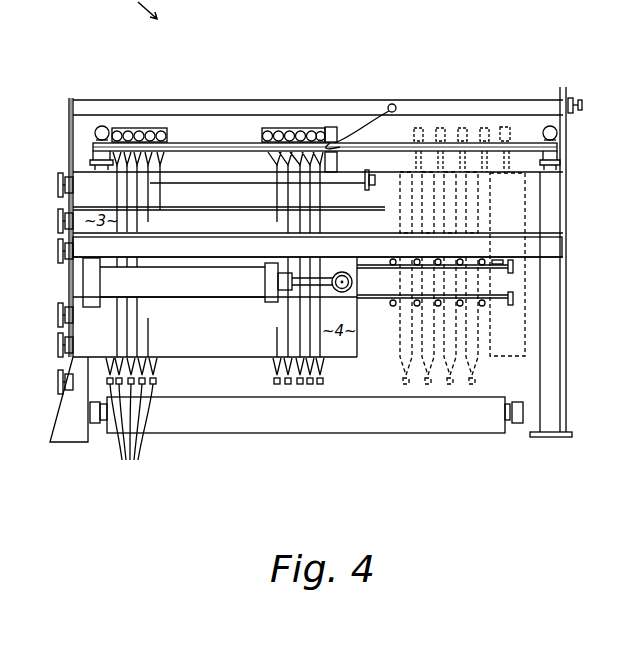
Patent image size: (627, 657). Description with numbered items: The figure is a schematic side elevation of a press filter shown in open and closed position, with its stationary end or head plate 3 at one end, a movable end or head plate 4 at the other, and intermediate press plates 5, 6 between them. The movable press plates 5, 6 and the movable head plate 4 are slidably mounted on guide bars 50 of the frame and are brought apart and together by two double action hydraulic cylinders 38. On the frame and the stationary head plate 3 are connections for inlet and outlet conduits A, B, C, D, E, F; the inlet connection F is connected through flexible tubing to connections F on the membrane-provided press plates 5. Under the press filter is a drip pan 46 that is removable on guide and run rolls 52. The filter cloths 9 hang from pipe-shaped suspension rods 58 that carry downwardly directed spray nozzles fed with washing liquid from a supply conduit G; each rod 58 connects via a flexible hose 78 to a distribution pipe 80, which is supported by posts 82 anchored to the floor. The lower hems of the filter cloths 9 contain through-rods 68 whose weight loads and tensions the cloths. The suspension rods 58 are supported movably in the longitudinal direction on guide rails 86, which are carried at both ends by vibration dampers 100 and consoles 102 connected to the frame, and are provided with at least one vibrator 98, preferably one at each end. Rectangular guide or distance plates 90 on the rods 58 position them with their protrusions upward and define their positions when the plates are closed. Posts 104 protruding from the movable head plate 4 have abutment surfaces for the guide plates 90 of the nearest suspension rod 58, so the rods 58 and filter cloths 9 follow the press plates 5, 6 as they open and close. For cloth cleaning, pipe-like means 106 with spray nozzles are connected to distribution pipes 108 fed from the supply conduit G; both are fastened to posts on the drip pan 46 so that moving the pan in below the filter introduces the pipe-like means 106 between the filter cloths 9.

The stationary end or head plate 3 is at (78, 288).
The movable end or head plate 4 is at (537, 328).
The intermediate press plate 5 is at (138, 338).
The intermediate press plate 6 is at (166, 326).
The filter cloth 9 is at (160, 163).
The double action hydraulic cylinder 38 is at (200, 283).
The drip pan 46 is at (385, 428).
The guide bar 50 is at (560, 249).
The guide and run roll 52 is at (512, 428).
The suspension rod 58 is at (276, 130).
The through-rod 68 is at (130, 433).
The flexible hose 78 is at (333, 163).
The distribution pipe 80 is at (428, 107).
The post 82 is at (73, 135).
The guide rail 86 is at (195, 148).
The guide or distance plate 90 is at (128, 130).
The vibrator 98 is at (102, 126).
The vibration damper 100 is at (95, 147).
The console 102 is at (90, 162).
The post 104 is at (331, 127).
The pipe-like means 106 is at (480, 260).
The distribution pipe 108 is at (403, 297).
The conduit connection A is at (58, 186).
The conduit connection B is at (58, 222).
The conduit connection C is at (58, 252).
The conduit connection D is at (58, 316).
The conduit connection E is at (58, 346).
The inlet connection F is at (112, 368).
The supply conduit G is at (582, 105).